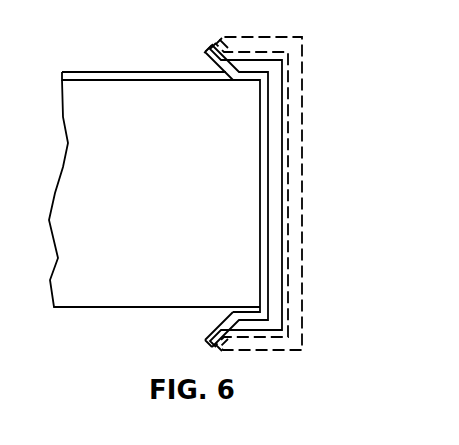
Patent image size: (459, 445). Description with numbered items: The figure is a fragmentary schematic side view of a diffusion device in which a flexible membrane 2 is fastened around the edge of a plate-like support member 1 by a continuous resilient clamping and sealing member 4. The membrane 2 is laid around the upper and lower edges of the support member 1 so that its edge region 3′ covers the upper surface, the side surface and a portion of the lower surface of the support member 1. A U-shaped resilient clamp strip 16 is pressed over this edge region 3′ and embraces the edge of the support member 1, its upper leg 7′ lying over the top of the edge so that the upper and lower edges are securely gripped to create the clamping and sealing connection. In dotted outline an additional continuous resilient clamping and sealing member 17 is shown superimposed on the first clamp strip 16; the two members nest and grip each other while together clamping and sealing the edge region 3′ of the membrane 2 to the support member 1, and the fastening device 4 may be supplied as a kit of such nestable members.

The support member 1 is at (120, 294).
The flexible membrane 2 is at (110, 70).
The edge region of the membrane 3′ is at (259, 155).
The continuous resilient clamping and sealing member 4 is at (200, 41).
The upper leg 7′ is at (257, 82).
The U-shaped resilient clamp strip 16 is at (275, 238).
The additional continuous resilient clamping and sealing member 17 is at (297, 145).